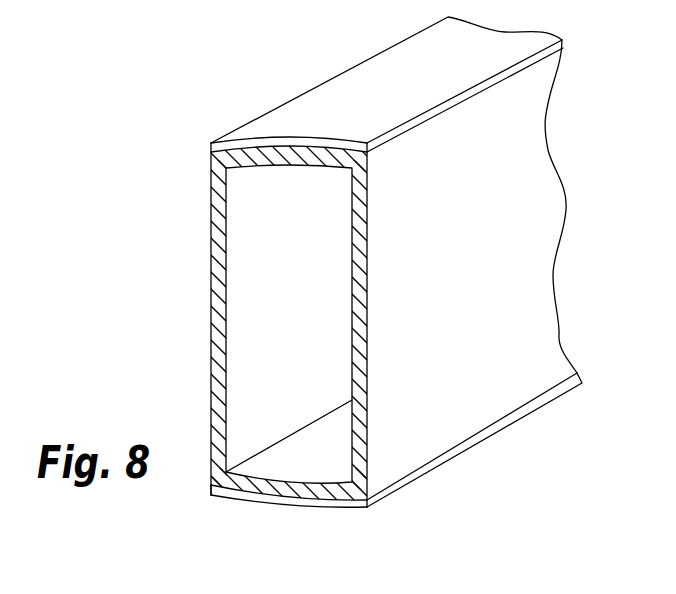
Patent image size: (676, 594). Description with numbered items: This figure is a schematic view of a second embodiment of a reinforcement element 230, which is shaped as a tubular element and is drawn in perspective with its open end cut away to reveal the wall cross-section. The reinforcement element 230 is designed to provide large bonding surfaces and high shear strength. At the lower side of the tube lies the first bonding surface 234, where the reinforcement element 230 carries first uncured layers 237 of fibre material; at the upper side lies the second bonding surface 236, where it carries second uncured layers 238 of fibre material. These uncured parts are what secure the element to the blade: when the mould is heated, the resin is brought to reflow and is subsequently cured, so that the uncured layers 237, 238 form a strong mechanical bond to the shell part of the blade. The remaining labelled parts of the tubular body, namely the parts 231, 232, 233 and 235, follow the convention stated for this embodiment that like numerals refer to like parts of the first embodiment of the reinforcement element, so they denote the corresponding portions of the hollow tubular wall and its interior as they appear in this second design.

The reinforcement element 230 is at (338, 292).
The interior passage 231 is at (229, 324).
The side wall 232 is at (518, 276).
The bottom wall 233 is at (258, 490).
The first bonding surface 234 is at (257, 503).
The top wall 235 is at (323, 158).
The second bonding surface 236 is at (317, 100).
The first uncured layers 237 is at (307, 503).
The second uncured layers 238 is at (210, 150).